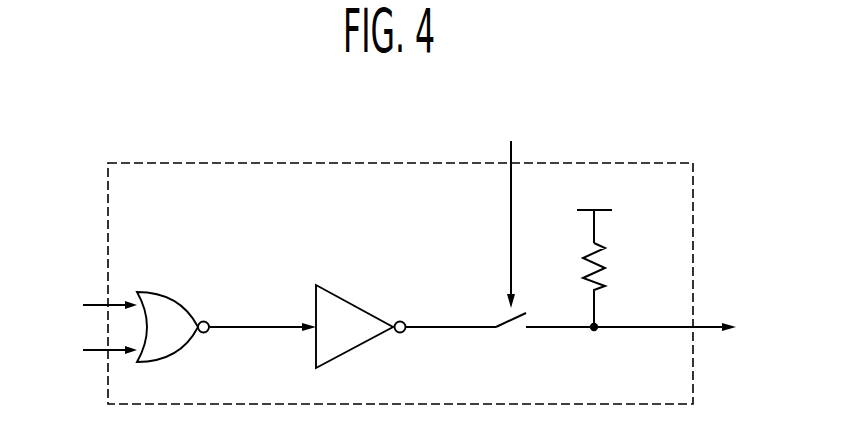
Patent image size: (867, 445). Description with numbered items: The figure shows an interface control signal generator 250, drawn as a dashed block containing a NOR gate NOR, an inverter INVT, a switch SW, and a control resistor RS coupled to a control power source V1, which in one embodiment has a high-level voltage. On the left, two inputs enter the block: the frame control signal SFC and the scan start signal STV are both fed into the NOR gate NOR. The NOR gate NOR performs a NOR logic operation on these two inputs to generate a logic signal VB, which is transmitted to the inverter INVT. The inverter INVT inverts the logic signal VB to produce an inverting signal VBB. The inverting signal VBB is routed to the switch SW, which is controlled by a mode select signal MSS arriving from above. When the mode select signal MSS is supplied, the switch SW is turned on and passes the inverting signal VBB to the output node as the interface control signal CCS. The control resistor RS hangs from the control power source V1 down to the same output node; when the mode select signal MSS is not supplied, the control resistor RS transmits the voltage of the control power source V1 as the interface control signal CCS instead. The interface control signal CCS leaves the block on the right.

The interface control signal generator 250 is at (616, 163).
The NOR gate NOR is at (173, 327).
The inverter INVT is at (361, 326).
The switch SW is at (511, 335).
The control resistor RS is at (606, 287).
The control power source V1 is at (594, 212).
The mode select signal MSS is at (510, 211).
The frame control signal SFC is at (93, 304).
The scan start signal STV is at (93, 349).
The logic signal VB is at (262, 315).
The inverting signal VBB is at (451, 313).
The interface control signal CCS is at (648, 329).